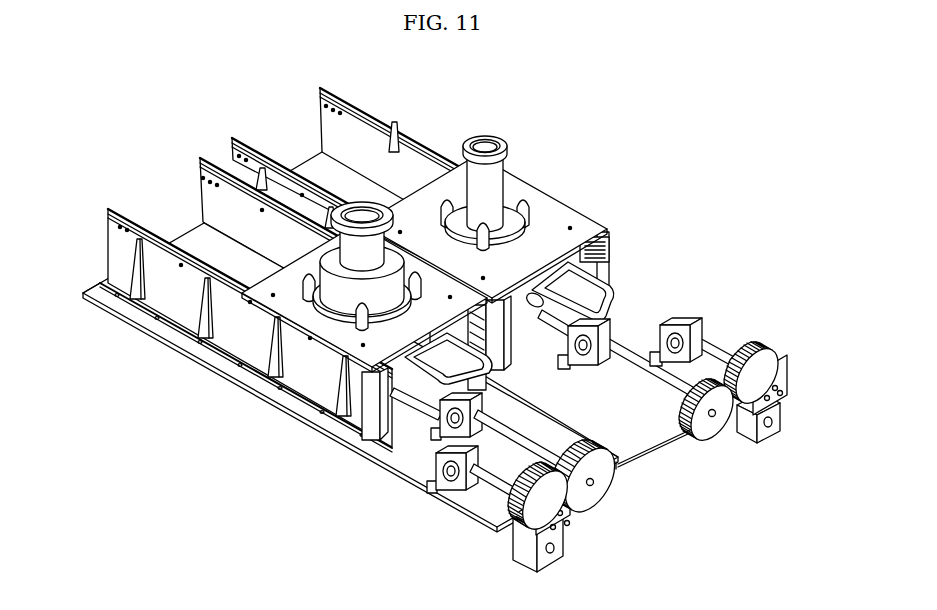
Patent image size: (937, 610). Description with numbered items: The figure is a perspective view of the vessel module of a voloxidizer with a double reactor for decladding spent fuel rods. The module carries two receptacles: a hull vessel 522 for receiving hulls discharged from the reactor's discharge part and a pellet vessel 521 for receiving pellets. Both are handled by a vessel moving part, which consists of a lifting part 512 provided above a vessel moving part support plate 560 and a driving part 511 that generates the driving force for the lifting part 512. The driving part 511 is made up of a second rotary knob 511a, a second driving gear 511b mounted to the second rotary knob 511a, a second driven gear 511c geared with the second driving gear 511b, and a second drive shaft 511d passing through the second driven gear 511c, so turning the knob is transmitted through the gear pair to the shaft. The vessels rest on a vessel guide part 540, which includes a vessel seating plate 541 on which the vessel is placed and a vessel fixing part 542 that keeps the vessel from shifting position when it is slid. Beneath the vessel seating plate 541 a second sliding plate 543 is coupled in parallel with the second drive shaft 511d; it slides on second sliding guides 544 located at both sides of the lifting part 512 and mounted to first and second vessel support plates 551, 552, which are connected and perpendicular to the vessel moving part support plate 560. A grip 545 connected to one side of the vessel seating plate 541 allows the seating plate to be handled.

The driving part 511 is at (693, 421).
The second rotary knob 511a is at (768, 443).
The second driving gear 511b is at (767, 347).
The second driven gear 511c is at (698, 433).
The second drive shaft 511d is at (620, 350).
The lifting part 512 is at (400, 423).
The pellet vessel 521 is at (393, 263).
The hull vessel 522 is at (480, 193).
The vessel guide part 540 is at (551, 184).
The vessel seating plate 541 is at (540, 182).
The vessel fixing part 542 is at (533, 198).
The second sliding plate 543 is at (605, 260).
The second sliding guides 544 is at (605, 246).
The grip 545 is at (608, 280).
The first vessel support plate 551 is at (117, 252).
The second vessel support plate 552 is at (210, 207).
The vessel moving part support plate 560 is at (637, 442).